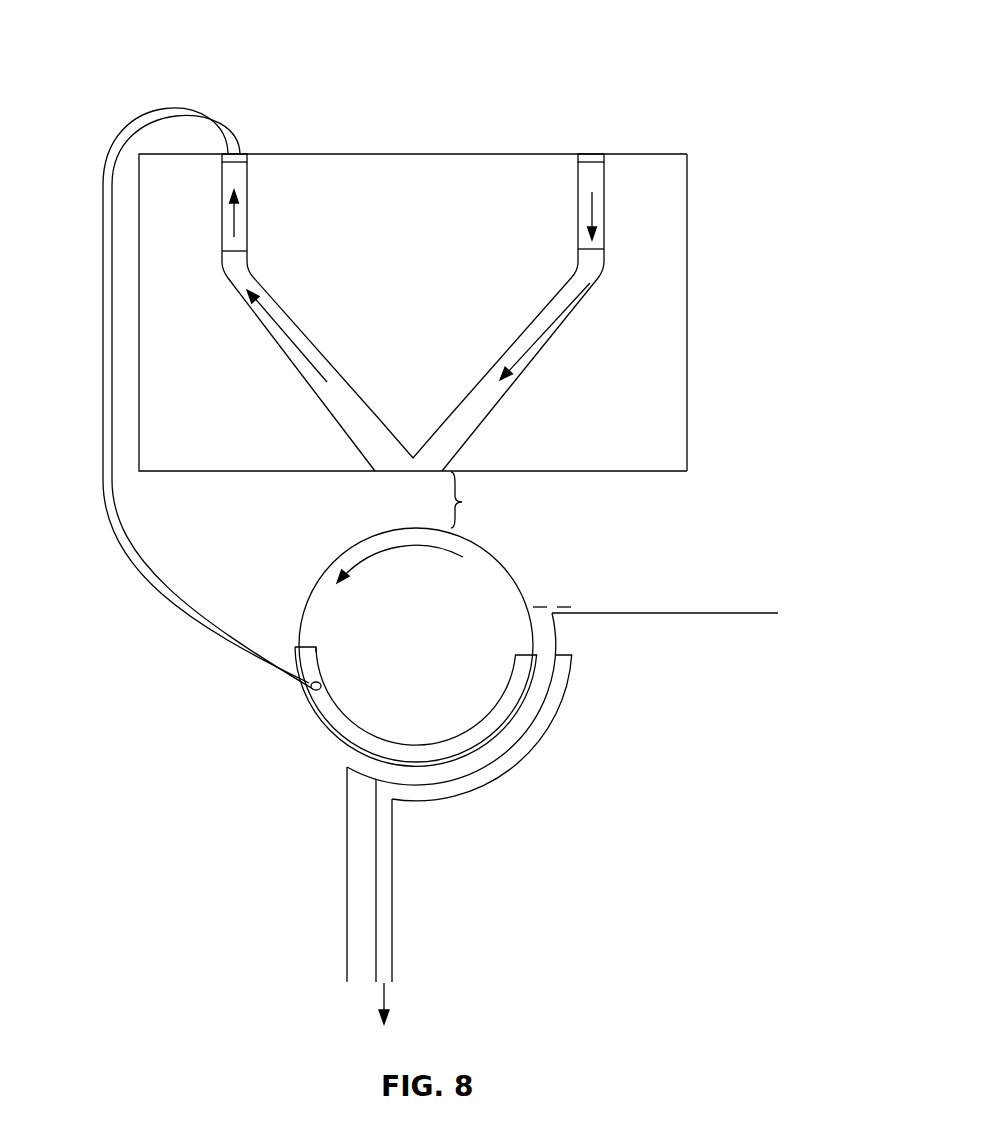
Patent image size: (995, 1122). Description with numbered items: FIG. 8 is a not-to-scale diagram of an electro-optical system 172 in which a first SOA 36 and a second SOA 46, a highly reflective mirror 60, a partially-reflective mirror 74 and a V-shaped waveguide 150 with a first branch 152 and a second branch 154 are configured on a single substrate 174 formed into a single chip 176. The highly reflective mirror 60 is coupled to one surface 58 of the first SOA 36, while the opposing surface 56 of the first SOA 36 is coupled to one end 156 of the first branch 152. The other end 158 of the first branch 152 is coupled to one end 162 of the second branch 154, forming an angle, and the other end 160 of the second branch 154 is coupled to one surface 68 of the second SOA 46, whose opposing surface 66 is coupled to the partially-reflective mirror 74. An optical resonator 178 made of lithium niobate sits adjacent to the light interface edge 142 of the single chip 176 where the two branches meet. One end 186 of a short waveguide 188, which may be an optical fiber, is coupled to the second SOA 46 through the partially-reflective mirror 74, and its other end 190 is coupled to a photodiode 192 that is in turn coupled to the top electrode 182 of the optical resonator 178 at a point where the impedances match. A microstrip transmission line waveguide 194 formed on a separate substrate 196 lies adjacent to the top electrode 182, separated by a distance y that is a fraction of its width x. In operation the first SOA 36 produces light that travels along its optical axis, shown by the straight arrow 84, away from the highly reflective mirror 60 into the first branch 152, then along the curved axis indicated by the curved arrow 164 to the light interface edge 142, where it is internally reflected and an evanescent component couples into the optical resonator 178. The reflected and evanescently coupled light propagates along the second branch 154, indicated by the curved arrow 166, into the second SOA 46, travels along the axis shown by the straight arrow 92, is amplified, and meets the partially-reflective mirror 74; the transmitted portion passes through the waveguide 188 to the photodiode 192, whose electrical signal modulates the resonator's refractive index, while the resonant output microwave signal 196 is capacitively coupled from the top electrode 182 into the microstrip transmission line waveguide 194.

The electro-optical system 172 is at (143, 46).
The one end of waveguide 186 is at (233, 153).
The waveguide 188 is at (100, 190).
The partially-reflective mirror 74 is at (241, 165).
The opposing surface of second SOA 66 is at (248, 178).
The second SOA 46 is at (230, 189).
The straight arrow 92 is at (230, 217).
The one surface of second SOA 68 is at (211, 250).
The other end of second branch 160 is at (233, 265).
The second branch 154 is at (256, 323).
The curved arrow 166 is at (297, 362).
The V-shaped waveguide 150 is at (413, 390).
The one end of second branch 162 is at (390, 461).
The other end of first branch 158 is at (460, 437).
The first branch 152 is at (578, 327).
The curved arrow 164 is at (535, 358).
The one end of first branch 156 is at (600, 265).
The opposing surface of first SOA 56 is at (617, 250).
The straight arrow 84 is at (598, 217).
The first SOA 36 is at (598, 185).
The one surface of first SOA 58 is at (608, 178).
The highly reflective mirror 60 is at (600, 160).
The single substrate 174 is at (675, 410).
The single chip 176 is at (690, 448).
The light interface edge 142 is at (577, 472).
The optical resonator 178 is at (505, 567).
The top electrode 182 is at (340, 728).
The other end of waveguide 190 is at (306, 687).
The photodiode 192 is at (327, 690).
The microstrip transmission line waveguide 194 is at (497, 773).
The separate substrate 196 is at (655, 613).